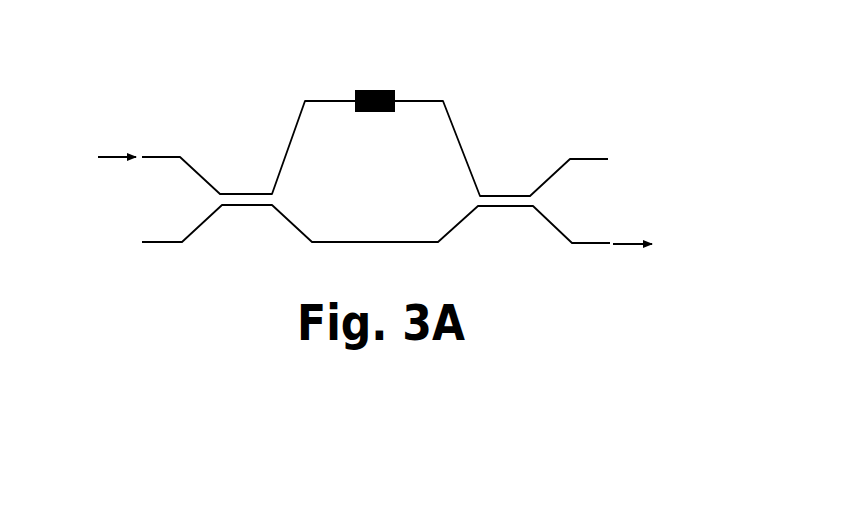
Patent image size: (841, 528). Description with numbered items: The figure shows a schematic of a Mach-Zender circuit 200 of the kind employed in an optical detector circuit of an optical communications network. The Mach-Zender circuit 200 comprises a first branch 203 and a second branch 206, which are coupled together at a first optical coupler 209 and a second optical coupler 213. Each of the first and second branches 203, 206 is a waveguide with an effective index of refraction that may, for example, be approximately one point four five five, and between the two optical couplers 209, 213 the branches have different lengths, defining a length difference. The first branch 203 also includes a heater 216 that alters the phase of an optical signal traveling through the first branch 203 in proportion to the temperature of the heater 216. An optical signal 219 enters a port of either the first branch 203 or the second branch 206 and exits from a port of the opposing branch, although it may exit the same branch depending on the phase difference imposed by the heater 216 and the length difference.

The Mach-Zender circuit 200 is at (636, 95).
The first branch 203 is at (466, 146).
The second branch 206 is at (384, 249).
The first optical coupler 209 is at (244, 234).
The second optical coupler 213 is at (509, 237).
The heater 216 is at (377, 87).
The optical signal 219 is at (108, 151).